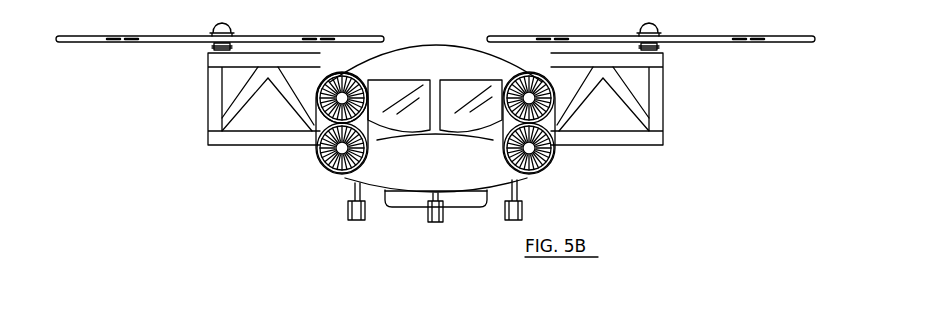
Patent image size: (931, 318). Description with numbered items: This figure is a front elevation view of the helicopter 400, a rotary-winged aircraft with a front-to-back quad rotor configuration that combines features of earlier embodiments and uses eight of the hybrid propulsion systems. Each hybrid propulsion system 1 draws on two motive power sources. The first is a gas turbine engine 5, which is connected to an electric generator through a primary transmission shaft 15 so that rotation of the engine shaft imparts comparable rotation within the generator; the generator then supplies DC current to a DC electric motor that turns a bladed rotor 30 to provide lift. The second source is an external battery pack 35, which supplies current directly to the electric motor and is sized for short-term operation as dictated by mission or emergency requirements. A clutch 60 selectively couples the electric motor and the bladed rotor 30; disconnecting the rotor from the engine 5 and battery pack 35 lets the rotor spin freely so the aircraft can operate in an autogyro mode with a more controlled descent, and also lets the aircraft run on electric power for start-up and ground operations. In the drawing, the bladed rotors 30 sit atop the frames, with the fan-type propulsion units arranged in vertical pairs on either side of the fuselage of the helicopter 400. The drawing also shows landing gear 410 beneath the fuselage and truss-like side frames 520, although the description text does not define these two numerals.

The hybrid propulsion system 1 is at (326, 80).
The gas turbine engine 5 is at (328, 167).
The primary transmission shaft 15 is at (368, 75).
The bladed rotor 30 is at (213, 29).
The external battery pack 35 is at (403, 205).
The clutch 60 is at (212, 47).
The helicopter 400 is at (437, 52).
The landing gear wheel 410 is at (508, 223).
The truss frame 520 is at (223, 138).